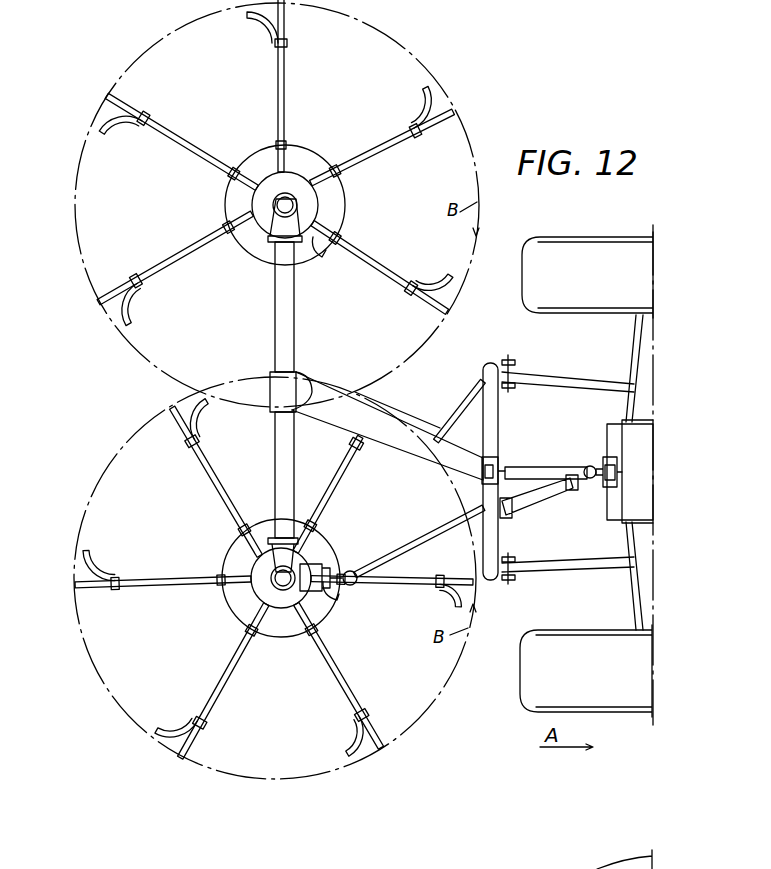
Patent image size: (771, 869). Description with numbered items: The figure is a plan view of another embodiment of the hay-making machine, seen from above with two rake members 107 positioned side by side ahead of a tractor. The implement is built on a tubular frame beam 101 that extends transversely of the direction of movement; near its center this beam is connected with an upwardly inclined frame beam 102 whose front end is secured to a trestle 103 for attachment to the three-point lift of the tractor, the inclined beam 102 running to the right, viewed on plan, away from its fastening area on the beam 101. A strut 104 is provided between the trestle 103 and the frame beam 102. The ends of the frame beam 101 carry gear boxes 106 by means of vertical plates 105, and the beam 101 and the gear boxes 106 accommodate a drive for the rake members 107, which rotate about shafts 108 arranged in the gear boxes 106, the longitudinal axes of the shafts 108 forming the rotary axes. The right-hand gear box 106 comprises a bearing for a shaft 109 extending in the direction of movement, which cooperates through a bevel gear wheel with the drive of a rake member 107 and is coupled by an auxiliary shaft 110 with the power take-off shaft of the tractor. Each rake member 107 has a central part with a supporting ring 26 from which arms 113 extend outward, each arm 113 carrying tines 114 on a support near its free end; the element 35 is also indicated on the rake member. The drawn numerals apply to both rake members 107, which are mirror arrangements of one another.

The supporting ring 26 is at (346, 216).
The clip 35 is at (312, 259).
The tubular frame beam 101 is at (277, 320).
The upwardly inclined frame beam 102 is at (387, 426).
The trestle 103 is at (493, 415).
The strut 104 is at (473, 390).
The vertical plate 105 is at (262, 260).
The gear box 106 is at (298, 178).
The rake member 107 is at (71, 155).
The shaft 108 is at (334, 200).
The shaft 109 is at (327, 592).
The auxiliary shaft 110 is at (445, 534).
The arm 113 is at (177, 250).
The tine 114 is at (129, 106).